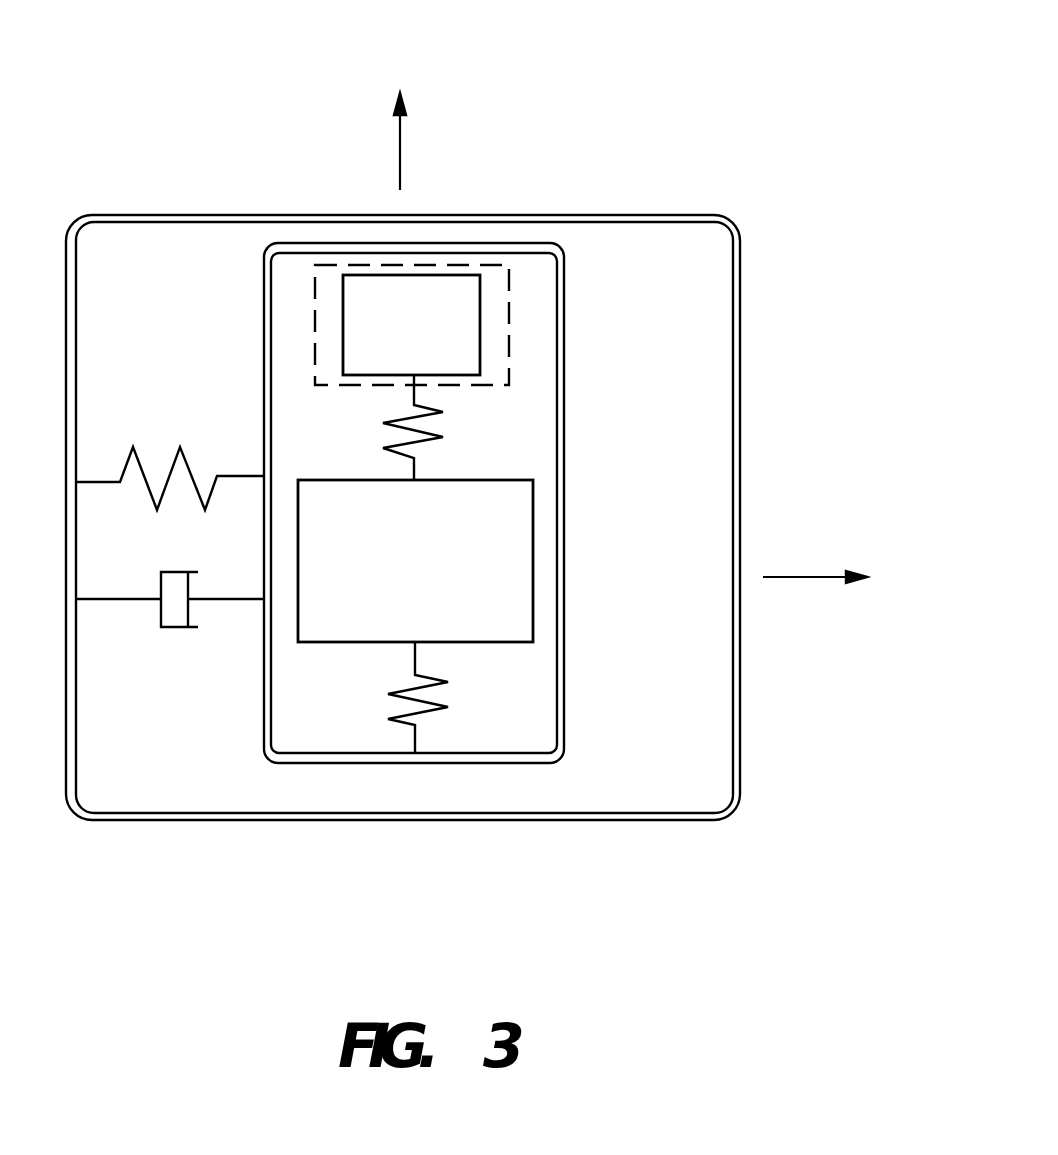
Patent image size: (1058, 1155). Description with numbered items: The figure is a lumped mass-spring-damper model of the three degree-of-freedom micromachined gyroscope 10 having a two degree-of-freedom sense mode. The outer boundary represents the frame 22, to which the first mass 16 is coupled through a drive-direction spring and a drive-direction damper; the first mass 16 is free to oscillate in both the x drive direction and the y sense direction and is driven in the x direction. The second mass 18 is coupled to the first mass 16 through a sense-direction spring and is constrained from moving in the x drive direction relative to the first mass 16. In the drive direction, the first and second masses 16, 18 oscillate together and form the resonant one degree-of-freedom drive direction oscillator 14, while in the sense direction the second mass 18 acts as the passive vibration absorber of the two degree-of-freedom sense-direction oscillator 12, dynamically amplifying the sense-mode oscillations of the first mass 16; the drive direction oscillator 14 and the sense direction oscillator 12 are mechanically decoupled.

The micromachined gyroscope 10 is at (656, 146).
The sense-direction oscillator 12 is at (313, 272).
The drive direction oscillator 14 is at (538, 765).
The first mass 16 is at (490, 548).
The second mass 18 is at (462, 332).
The frame 22 is at (130, 822).